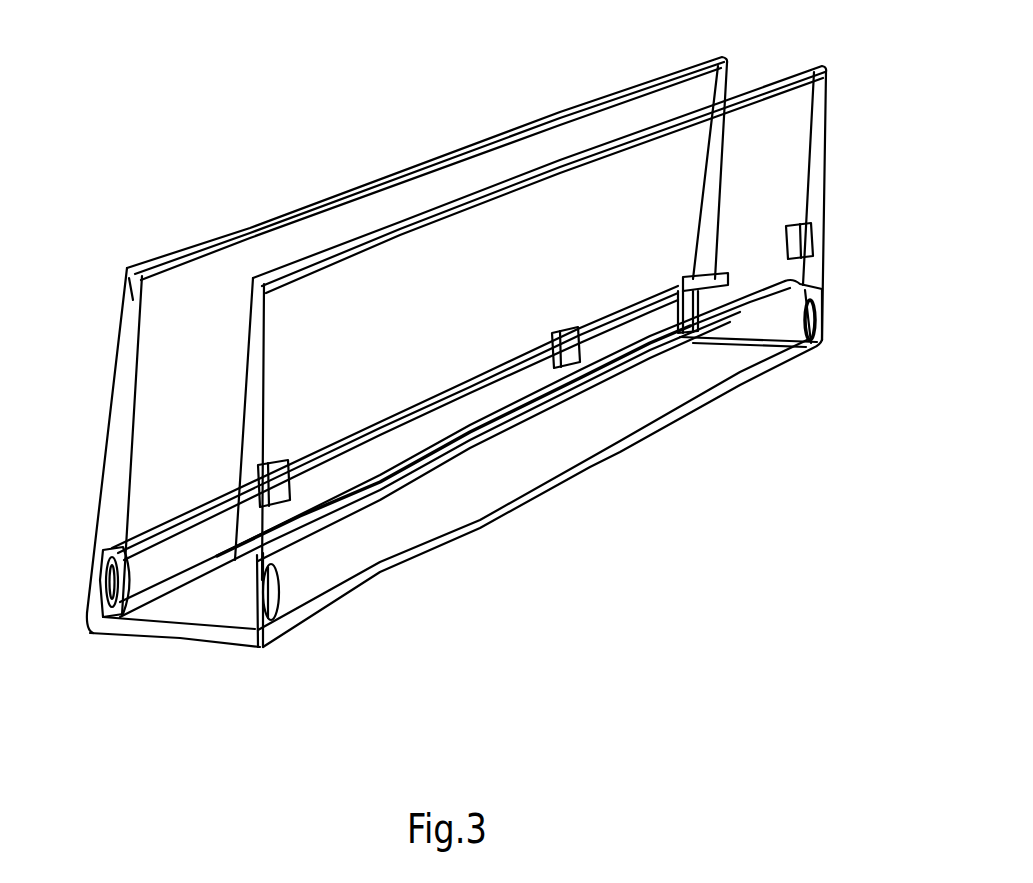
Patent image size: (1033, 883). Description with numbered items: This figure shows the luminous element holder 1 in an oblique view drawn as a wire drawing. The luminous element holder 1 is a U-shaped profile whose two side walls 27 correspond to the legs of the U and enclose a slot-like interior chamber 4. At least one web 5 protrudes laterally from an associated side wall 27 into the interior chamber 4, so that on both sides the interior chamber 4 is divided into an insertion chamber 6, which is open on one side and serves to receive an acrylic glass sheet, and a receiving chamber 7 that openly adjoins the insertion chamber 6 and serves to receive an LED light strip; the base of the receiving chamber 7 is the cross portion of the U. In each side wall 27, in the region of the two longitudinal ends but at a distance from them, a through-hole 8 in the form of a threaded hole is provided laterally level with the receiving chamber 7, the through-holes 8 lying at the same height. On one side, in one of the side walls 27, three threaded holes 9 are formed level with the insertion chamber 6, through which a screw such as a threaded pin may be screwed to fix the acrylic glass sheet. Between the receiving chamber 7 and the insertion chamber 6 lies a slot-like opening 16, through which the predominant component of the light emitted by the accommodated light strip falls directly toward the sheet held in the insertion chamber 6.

The luminous element holder 1 is at (383, 132).
The interior chamber 4 is at (222, 258).
The web 5 is at (121, 614).
The insertion chamber 6 is at (140, 493).
The receiving chamber 7 is at (220, 613).
The through-hole 8 is at (103, 582).
The threaded hole 9 is at (283, 462).
The slot-like opening 16 is at (185, 553).
The side wall 27 is at (728, 77).